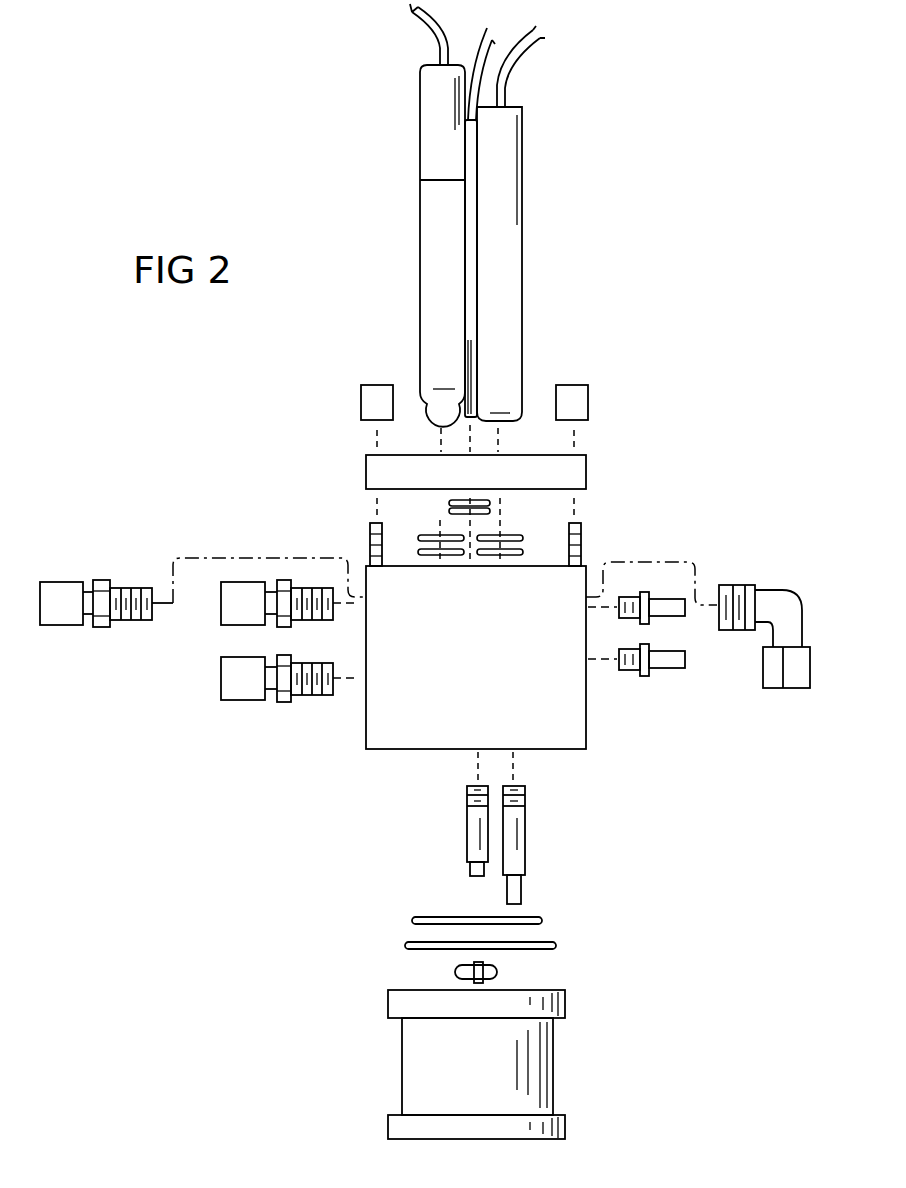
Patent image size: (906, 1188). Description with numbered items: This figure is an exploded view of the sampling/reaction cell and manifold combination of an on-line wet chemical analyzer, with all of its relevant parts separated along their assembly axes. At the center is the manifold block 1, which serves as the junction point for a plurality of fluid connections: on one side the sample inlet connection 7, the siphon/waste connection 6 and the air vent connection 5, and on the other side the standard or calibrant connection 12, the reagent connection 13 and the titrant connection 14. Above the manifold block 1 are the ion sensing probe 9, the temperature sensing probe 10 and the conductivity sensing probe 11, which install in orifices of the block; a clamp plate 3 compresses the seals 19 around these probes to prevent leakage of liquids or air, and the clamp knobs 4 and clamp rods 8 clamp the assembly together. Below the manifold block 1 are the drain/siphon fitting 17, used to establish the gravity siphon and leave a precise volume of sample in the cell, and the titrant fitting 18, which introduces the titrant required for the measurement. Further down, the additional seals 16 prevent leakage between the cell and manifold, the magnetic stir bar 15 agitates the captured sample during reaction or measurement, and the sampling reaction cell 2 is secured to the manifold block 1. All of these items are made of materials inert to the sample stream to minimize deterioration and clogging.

The manifold block 1 is at (358, 747).
The sampling reaction cell 2 is at (392, 1057).
The clamp plate 3 is at (360, 452).
The clamp knobs 4 is at (361, 386).
The air vent connection 5 is at (66, 626).
The siphon/waste connection 6 is at (222, 615).
The sample inlet connection 7 is at (222, 690).
The clamp rods 8 is at (370, 524).
The ion sensing probe 9 is at (416, 152).
The temperature sensing probe 10 is at (476, 422).
The conductivity sensing probe 11 is at (530, 152).
The standard or calibrant connection 12 is at (684, 617).
The reagent connection 13 is at (684, 669).
The titrant connection 14 is at (778, 690).
The magnetic stir bar 15 is at (498, 970).
The additional seals 16 is at (398, 922).
The drain/siphon fitting 17 is at (466, 840).
The titrant fitting 18 is at (525, 845).
The seals 19 is at (438, 503).